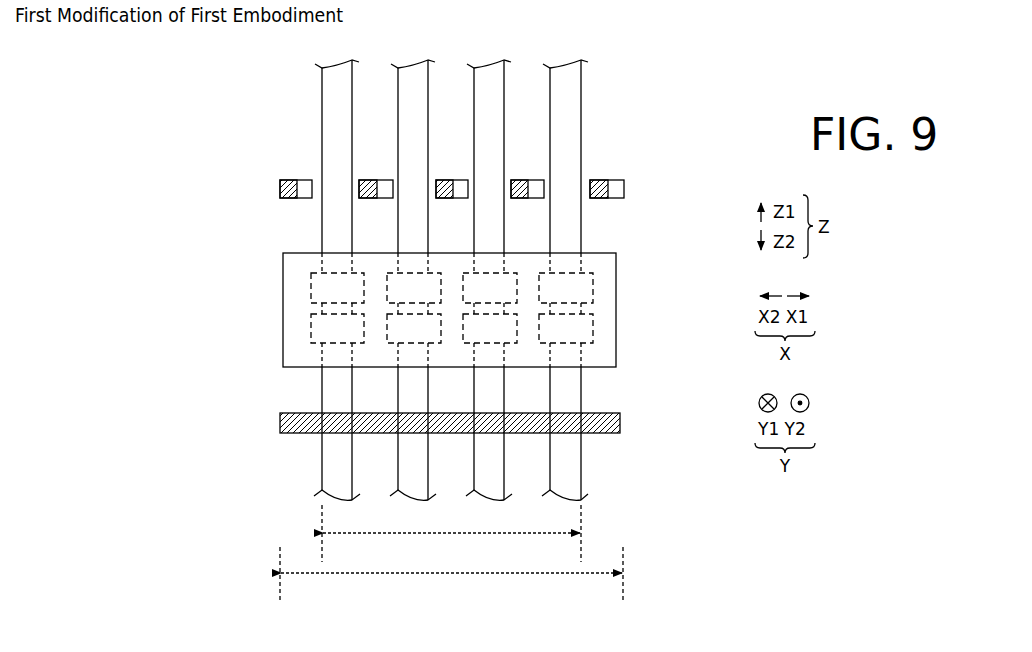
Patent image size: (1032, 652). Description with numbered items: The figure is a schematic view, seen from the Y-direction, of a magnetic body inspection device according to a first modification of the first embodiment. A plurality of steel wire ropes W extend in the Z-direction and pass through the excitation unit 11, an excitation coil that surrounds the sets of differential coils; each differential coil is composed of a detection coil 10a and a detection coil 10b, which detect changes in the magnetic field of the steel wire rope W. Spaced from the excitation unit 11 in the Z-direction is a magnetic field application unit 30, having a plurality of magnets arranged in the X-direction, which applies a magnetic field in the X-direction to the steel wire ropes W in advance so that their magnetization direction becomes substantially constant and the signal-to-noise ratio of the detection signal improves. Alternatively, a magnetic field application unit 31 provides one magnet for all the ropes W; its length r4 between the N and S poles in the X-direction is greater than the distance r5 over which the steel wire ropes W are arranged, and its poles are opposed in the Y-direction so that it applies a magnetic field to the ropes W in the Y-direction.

The steel wire rope W is at (321, 100).
The magnetic field application unit 30 is at (280, 187).
The excitation unit 11 is at (617, 302).
The detection coil 10a is at (311, 284).
The detection coil 10b is at (311, 330).
The magnetic field application unit 31 is at (280, 420).
The distance r5 is at (451, 535).
The length r4 is at (451, 576).